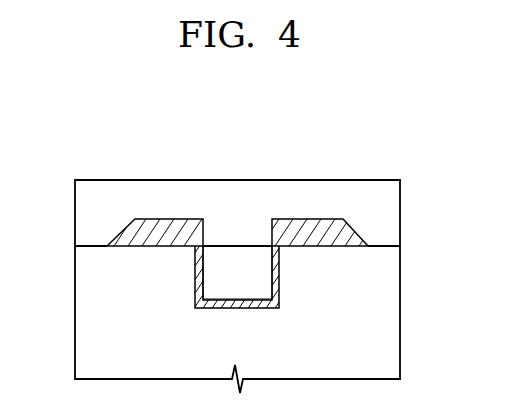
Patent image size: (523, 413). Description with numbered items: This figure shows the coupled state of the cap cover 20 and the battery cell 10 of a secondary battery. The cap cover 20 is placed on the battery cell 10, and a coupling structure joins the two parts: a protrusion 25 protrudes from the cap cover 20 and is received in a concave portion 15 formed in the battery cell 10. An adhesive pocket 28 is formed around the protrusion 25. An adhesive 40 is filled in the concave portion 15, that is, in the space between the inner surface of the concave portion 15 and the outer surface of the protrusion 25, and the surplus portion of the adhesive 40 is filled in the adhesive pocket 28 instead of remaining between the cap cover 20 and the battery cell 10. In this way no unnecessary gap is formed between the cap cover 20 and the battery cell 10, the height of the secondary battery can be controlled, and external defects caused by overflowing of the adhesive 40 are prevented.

The battery cell 10 is at (393, 333).
The concave portion 15 is at (280, 278).
The cap cover 20 is at (393, 213).
The protrusion 25 is at (233, 277).
The adhesive pocket 28 is at (168, 218).
The adhesive 40 is at (310, 228).